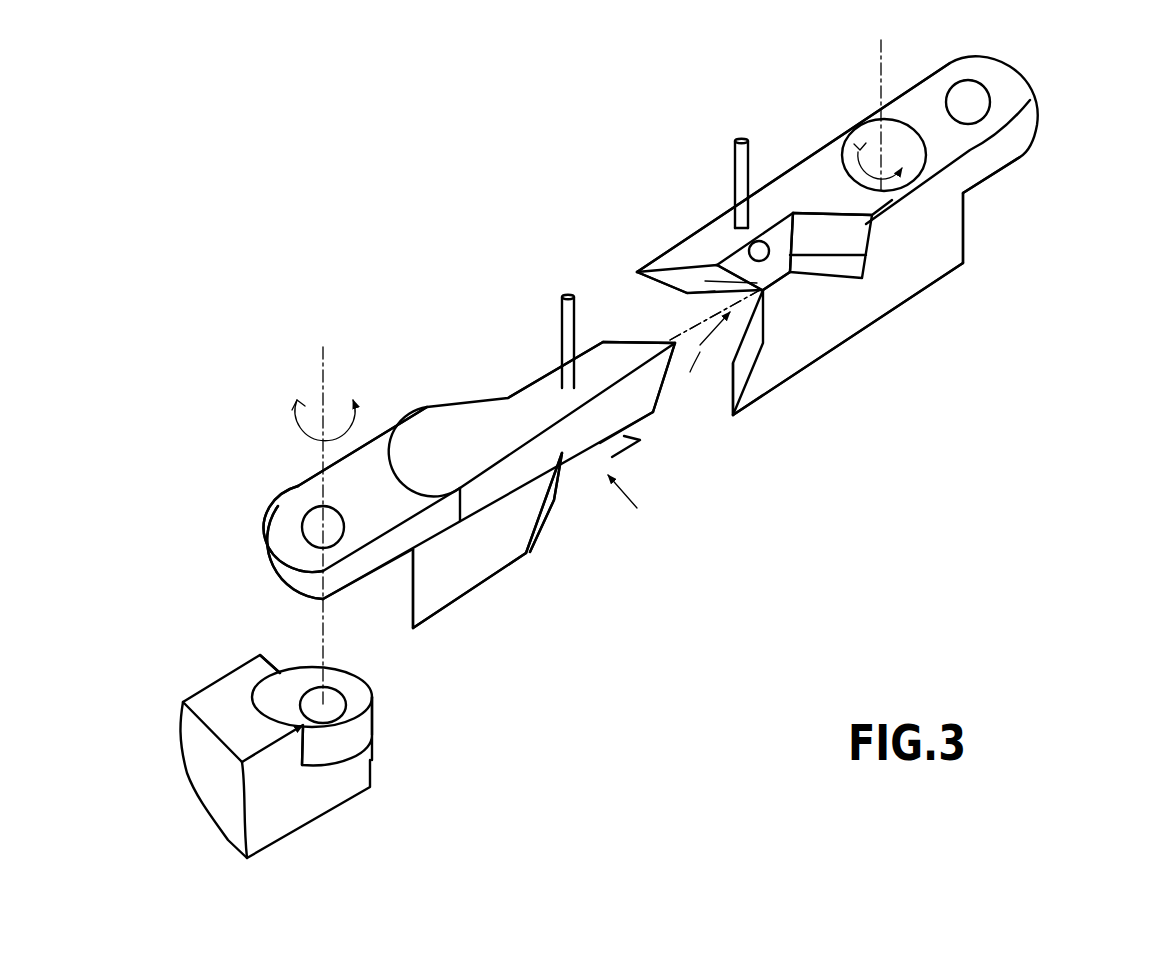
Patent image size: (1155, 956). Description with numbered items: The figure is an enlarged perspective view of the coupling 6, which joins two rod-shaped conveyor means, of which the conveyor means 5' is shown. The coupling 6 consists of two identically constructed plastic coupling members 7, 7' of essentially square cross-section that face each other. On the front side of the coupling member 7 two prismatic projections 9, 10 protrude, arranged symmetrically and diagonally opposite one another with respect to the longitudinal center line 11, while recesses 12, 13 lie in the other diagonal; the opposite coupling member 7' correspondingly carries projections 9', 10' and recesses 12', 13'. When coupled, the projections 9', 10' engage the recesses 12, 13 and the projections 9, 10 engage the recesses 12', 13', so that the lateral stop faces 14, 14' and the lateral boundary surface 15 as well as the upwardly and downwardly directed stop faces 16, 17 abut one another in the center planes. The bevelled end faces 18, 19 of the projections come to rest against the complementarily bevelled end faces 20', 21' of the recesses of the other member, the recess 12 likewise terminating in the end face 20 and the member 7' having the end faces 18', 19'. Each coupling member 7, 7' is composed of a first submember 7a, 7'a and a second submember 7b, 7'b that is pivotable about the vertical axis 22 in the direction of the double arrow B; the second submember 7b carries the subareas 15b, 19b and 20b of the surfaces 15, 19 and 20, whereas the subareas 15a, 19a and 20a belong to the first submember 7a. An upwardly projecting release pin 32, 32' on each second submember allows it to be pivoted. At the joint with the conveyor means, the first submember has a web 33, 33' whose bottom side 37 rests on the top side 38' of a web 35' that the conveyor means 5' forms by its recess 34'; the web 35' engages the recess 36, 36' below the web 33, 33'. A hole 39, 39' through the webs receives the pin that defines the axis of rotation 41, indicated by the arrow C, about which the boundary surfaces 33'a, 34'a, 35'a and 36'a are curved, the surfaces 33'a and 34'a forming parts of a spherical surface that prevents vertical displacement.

The conveyor means 5' is at (275, 756).
The coupling 6 is at (452, 287).
The coupling member 7 is at (837, 235).
The first submember 7a is at (895, 253).
The second submember 7b is at (907, 213).
The coupling member 7' is at (469, 503).
The first submember 7'a is at (472, 605).
The second submember 7'b is at (387, 402).
The prismatic projection 9 is at (786, 360).
The prismatic projection 9' is at (577, 502).
The prismatic projection 10 is at (705, 246).
The prismatic projection 10' is at (676, 446).
The longitudinal center line 11 is at (682, 372).
The recess 12 is at (842, 327).
The recess 12' is at (541, 363).
The recess 13 is at (702, 315).
The recess 13' is at (640, 501).
The lateral stop face 14 is at (708, 337).
The lateral stop face 14' is at (676, 428).
The lateral stop face 15 is at (730, 217).
The subarea of lateral boundary surface 15a is at (732, 212).
The subarea of lateral boundary surface 15b is at (747, 228).
The stop face 16 is at (826, 301).
The lower boundary surface 17 is at (705, 296).
The end face 18 is at (769, 405).
The end face 18' is at (649, 451).
The end face 19 is at (648, 241).
The end face 19' is at (624, 327).
The subarea of end face 19a is at (657, 262).
The subarea of end face 19b is at (640, 268).
The end face of recess 20 is at (825, 164).
The end face of recess 20' is at (420, 424).
The subarea of end face 20a is at (805, 268).
The subarea of end face 20b is at (817, 204).
The end face of recess 21' is at (582, 521).
The vertical axis 22 is at (880, 63).
The release pin 32 is at (719, 160).
The release pin 32' is at (536, 337).
The web 33 is at (1046, 102).
The web 33' is at (272, 507).
The front boundary surface of web 33'a is at (252, 552).
The recess 34' is at (379, 788).
The rear boundary surface of recess 34'a is at (237, 640).
The web 35' is at (358, 727).
The front boundary surface of web 35'a is at (423, 716).
The recess 36 is at (1054, 228).
The recess 36' is at (278, 578).
The rear boundary surface of recess 36'a is at (380, 591).
The bottom side of web 37 is at (1025, 158).
The top side of web 38' is at (368, 681).
The hole 39 is at (1024, 78).
The hole 39' is at (262, 513).
The axis of rotation 41 is at (323, 360).
The double arrow B is at (883, 157).
The rotation direction C is at (315, 420).